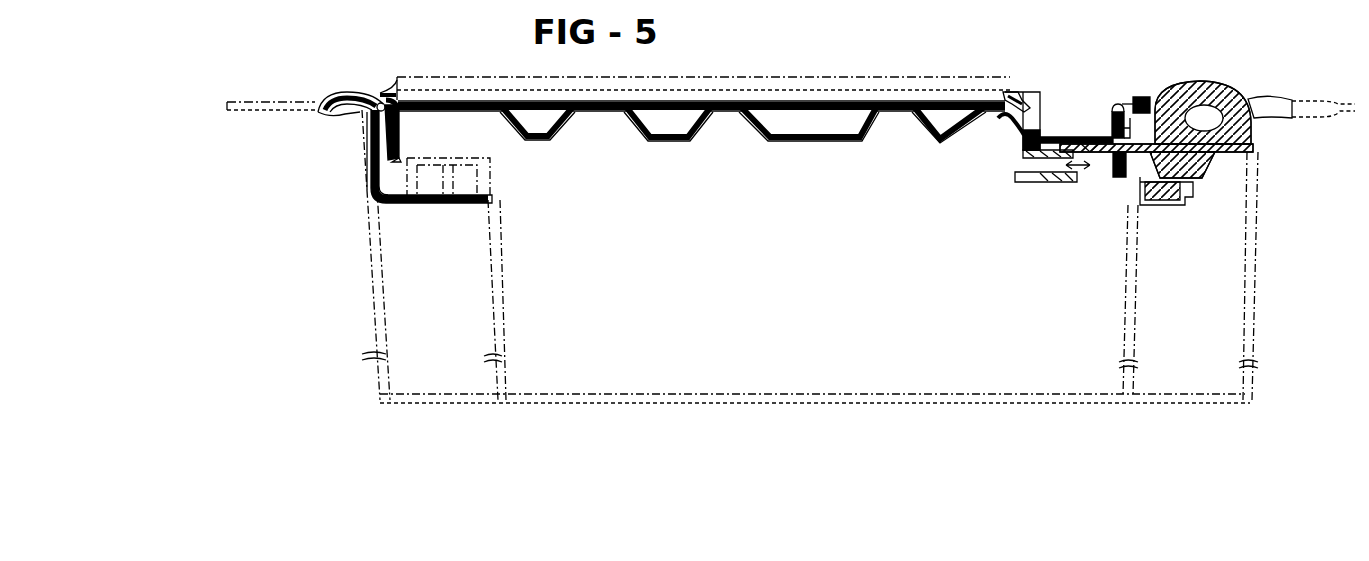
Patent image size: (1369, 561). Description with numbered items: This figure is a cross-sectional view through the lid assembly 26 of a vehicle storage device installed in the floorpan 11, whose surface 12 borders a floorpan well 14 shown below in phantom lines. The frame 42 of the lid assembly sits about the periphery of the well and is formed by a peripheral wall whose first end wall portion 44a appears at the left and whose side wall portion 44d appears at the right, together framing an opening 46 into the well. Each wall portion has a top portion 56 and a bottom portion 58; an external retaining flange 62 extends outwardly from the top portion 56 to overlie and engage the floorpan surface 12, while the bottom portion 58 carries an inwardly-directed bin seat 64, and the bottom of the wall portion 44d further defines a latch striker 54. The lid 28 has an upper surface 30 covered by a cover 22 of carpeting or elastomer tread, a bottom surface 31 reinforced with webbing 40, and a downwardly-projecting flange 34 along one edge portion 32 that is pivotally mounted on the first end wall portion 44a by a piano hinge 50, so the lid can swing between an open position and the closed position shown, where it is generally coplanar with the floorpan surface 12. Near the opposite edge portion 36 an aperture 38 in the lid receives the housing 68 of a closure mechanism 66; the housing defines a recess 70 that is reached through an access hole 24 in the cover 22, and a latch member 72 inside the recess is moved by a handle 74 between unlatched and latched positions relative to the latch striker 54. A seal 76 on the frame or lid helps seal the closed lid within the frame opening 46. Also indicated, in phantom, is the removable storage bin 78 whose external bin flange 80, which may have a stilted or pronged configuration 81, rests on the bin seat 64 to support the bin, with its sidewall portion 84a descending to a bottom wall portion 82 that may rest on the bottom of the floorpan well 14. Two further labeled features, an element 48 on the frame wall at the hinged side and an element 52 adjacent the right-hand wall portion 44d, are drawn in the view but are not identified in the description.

The floorpan 11 is at (235, 95).
The surface of the floorpan 12 is at (255, 100).
The floorpan well 14 is at (380, 404).
The cover 22 is at (450, 78).
The access hole 24 is at (1018, 86).
The lid assembly 26 is at (297, 92).
The lid 28 is at (392, 93).
The upper surface 30 is at (715, 100).
The bottom surface 31 is at (668, 118).
The edge portion 32 is at (386, 102).
The downwardly-projecting flange 34 is at (395, 156).
The opposite edge portion 36 is at (1213, 85).
The aperture 38 is at (1155, 100).
The webbing 40 is at (760, 138).
The frame 42 is at (321, 102).
The first end wall portion 44a is at (376, 195).
The side wall portion 44d is at (1270, 122).
The opening 46 is at (384, 200).
The frame wall 48 is at (370, 181).
The piano hinge 50 is at (376, 170).
The pillar 52 is at (1257, 152).
The latch striker 54 is at (1202, 150).
The top portion 56 is at (380, 143).
The bottom portion 58 is at (385, 192).
The external retaining flange 62 is at (334, 113).
The bin seat 64 is at (492, 199).
The closure mechanism 66 is at (1012, 80).
The housing 68 is at (1145, 98).
The recess 70 is at (1022, 134).
The latch member 72 is at (1160, 192).
The handle 74 is at (1132, 101).
The seal 76 is at (1242, 104).
The removable storage bin 78 is at (503, 194).
The external bin flange 80 is at (423, 149).
The stilted or pronged configuration 81 is at (457, 181).
The bottom wall portion 82 is at (740, 392).
The sidewall portion 84a is at (500, 304).